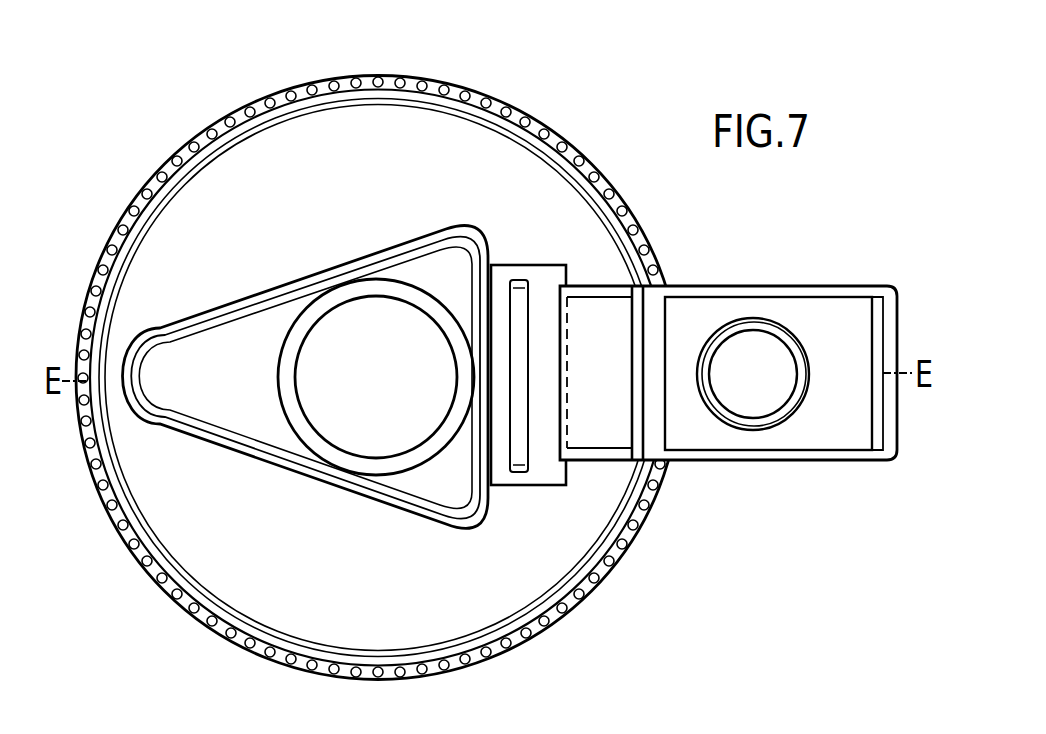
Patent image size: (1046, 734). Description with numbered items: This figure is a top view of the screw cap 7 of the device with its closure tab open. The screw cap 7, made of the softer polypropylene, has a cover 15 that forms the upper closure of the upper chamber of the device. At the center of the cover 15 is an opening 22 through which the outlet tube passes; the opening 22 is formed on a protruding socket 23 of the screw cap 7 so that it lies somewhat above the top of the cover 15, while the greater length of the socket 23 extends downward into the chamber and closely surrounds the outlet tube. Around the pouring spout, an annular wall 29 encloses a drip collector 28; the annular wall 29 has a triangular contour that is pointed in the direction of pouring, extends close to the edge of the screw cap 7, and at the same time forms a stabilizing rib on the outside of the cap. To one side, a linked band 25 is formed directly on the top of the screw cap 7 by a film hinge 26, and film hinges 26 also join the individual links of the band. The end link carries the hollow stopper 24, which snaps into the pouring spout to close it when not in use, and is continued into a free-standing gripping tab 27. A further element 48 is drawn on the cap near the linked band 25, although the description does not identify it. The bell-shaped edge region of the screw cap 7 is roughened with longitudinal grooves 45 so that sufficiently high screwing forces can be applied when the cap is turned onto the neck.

The screw cap 7 is at (558, 645).
The cover 15 is at (210, 523).
The opening 22 is at (370, 293).
The socket 23 is at (328, 292).
The stopper 24 is at (757, 430).
The linked band 25 is at (825, 460).
The film hinge 26 is at (653, 380).
The gripping tab 27 is at (874, 287).
The drip collector 28 is at (240, 345).
The annular wall 29 is at (142, 335).
The grooves 45 is at (556, 140).
The slotted guide block 48 is at (517, 300).